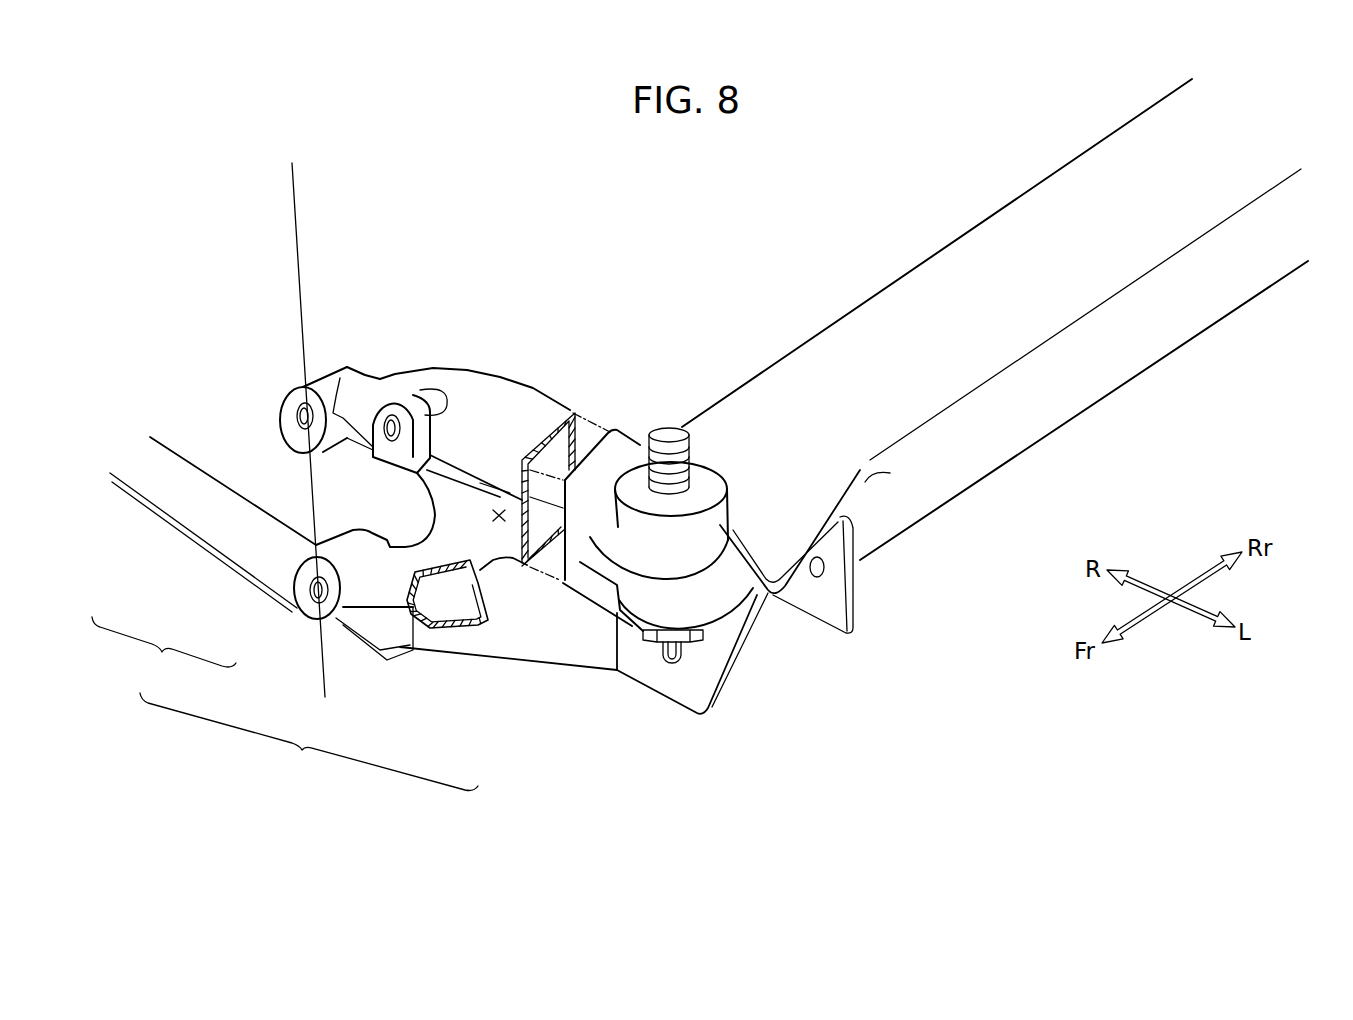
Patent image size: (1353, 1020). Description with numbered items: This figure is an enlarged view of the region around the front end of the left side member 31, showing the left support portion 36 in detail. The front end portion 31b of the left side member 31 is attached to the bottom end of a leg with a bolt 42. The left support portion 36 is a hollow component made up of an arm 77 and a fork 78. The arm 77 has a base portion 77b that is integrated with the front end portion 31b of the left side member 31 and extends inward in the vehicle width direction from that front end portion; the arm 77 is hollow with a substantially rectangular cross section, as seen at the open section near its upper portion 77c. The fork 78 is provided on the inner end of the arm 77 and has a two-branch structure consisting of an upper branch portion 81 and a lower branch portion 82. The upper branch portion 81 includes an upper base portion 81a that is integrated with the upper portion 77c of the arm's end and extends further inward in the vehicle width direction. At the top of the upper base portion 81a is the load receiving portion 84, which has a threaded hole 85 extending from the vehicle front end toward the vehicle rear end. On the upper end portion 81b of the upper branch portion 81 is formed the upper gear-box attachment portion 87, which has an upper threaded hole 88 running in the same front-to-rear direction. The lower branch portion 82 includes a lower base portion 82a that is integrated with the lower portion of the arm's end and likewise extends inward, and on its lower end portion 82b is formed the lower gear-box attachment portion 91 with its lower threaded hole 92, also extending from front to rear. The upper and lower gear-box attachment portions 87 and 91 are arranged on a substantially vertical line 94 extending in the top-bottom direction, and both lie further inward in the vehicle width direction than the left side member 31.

The left side member 31 is at (1066, 196).
The front end portion of the left side member 31b is at (720, 528).
The left support portion 36 is at (309, 742).
The bolt 42 is at (687, 640).
The arm 77 is at (590, 557).
The base portion of the arm 77b is at (627, 447).
The upper portion of the end portion of the arm 77c is at (510, 407).
The fork 78 is at (164, 652).
The upper branch portion 81 is at (437, 377).
The upper base portion 81a is at (473, 390).
The upper end portion of the upper branch portion 81b is at (360, 397).
The lower branch portion 82 is at (313, 623).
The lower base portion 82a is at (463, 575).
The lower end portion of the lower branch portion 82b is at (380, 560).
The load receiving portion 84 is at (405, 400).
The threaded hole 85 is at (388, 440).
The upper gear-box attachment portion 87 is at (328, 382).
The upper threaded hole 88 is at (290, 422).
The lower gear-box attachment portion 91 is at (343, 553).
The lower threaded hole 92 is at (308, 585).
The substantially vertical line 94 is at (293, 193).